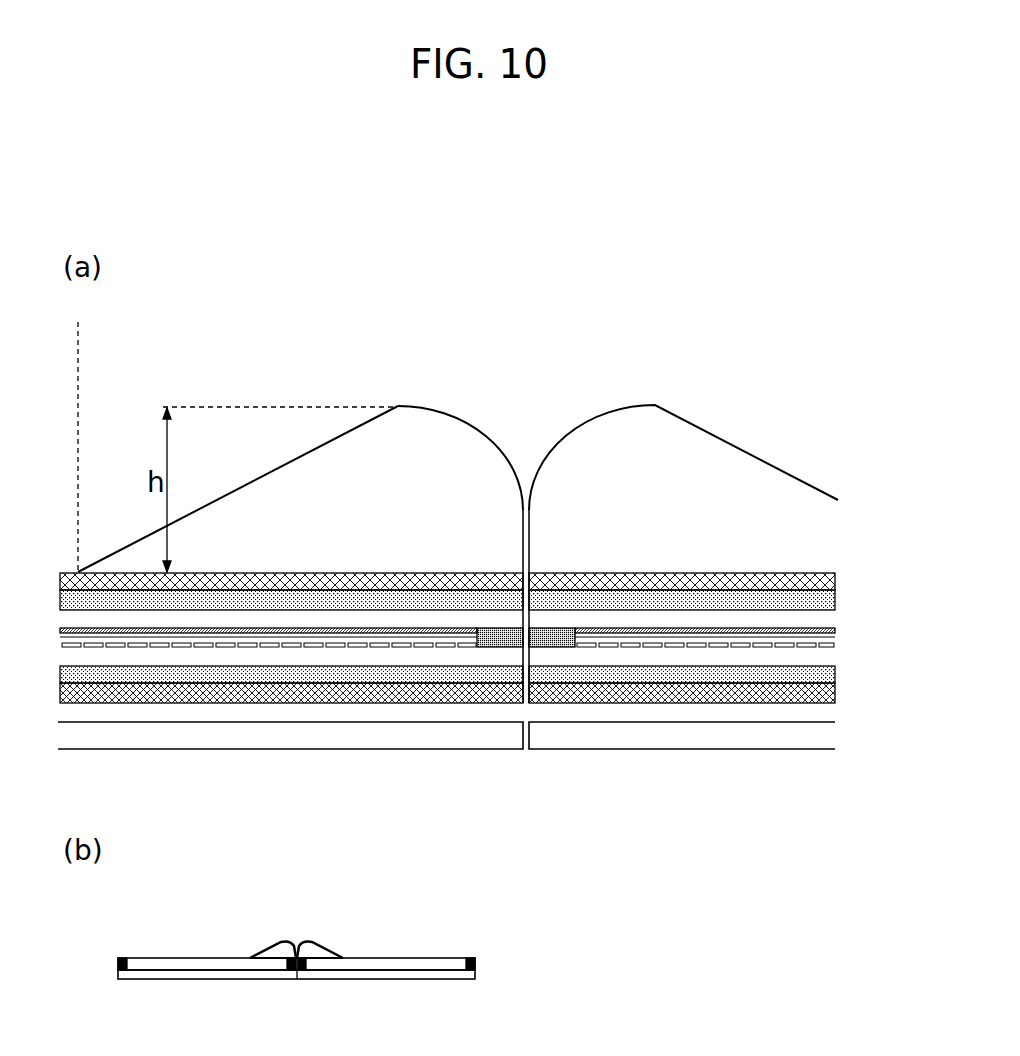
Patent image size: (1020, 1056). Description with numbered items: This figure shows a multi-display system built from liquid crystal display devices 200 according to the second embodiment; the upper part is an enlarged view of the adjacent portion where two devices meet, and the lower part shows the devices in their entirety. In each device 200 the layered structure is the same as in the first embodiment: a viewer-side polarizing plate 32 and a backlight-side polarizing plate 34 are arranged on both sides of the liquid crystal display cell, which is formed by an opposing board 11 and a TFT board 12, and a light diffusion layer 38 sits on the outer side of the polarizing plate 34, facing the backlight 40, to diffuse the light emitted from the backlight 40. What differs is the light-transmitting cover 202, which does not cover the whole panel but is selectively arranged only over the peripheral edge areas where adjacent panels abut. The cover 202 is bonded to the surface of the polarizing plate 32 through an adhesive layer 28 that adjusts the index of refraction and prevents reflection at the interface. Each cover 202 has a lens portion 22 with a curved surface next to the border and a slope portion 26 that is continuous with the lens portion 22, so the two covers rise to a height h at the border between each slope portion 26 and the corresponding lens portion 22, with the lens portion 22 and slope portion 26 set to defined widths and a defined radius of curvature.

The liquid crystal display device 200 is at (788, 334).
The light-transmitting cover 202 is at (727, 462).
The slope portion 26 is at (398, 405).
The lens portion 22 is at (525, 510).
The adhesive layer 28 is at (816, 582).
The viewer-side polarizing plate 32 is at (813, 603).
The opposing board 11 is at (817, 625).
The TFT board 12 is at (815, 660).
The backlight-side polarizing plate 34 is at (815, 678).
The light diffusion layer 38 is at (815, 697).
The backlight 40 is at (815, 737).